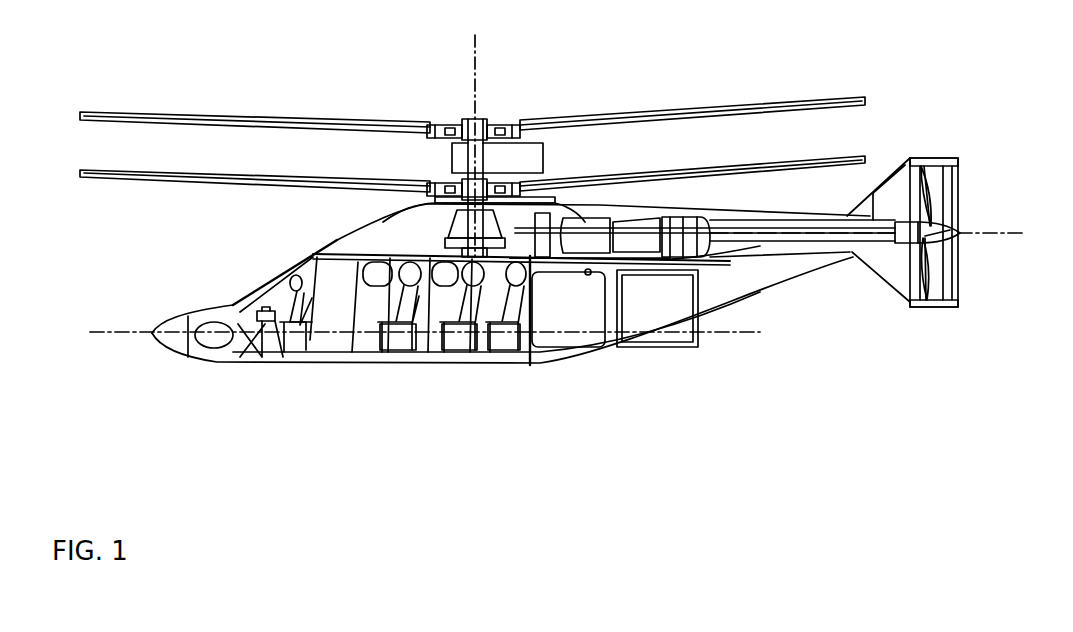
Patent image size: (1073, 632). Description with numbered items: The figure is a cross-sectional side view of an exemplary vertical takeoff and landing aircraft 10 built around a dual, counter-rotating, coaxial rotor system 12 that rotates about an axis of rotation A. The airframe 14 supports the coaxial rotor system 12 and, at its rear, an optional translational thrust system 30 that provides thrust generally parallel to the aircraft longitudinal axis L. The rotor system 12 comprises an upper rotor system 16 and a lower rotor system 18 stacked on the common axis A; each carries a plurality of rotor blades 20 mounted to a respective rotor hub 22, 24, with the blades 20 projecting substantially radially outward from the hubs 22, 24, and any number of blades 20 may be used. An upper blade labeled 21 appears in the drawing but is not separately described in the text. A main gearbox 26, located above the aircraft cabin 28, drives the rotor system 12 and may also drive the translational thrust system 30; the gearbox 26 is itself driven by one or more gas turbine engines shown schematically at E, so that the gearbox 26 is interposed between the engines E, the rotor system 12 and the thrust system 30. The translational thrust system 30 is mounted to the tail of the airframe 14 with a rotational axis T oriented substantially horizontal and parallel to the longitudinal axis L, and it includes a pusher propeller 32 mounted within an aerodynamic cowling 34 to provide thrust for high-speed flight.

The vertical takeoff and landing aircraft 10 is at (718, 72).
The dual, counter-rotating, coaxial rotor system 12 is at (537, 106).
The airframe 14 is at (337, 240).
The upper rotor system 16 is at (453, 106).
The lower rotor system 18 is at (412, 178).
The rotor blades 20 is at (588, 118).
The upper rotor blade 21 is at (427, 124).
The rotor hub 22 is at (492, 117).
The rotor hub 24 is at (503, 166).
The main gearbox 26 is at (447, 230).
The aircraft cabin 28 is at (408, 338).
The translational thrust system 30 is at (972, 191).
The pusher propeller 32 is at (932, 210).
The aerodynamic cowling 34 is at (935, 160).
The axis of rotation A is at (476, 55).
The engines E is at (650, 222).
The aircraft longitudinal axis L is at (753, 333).
The rotational axis T is at (987, 237).